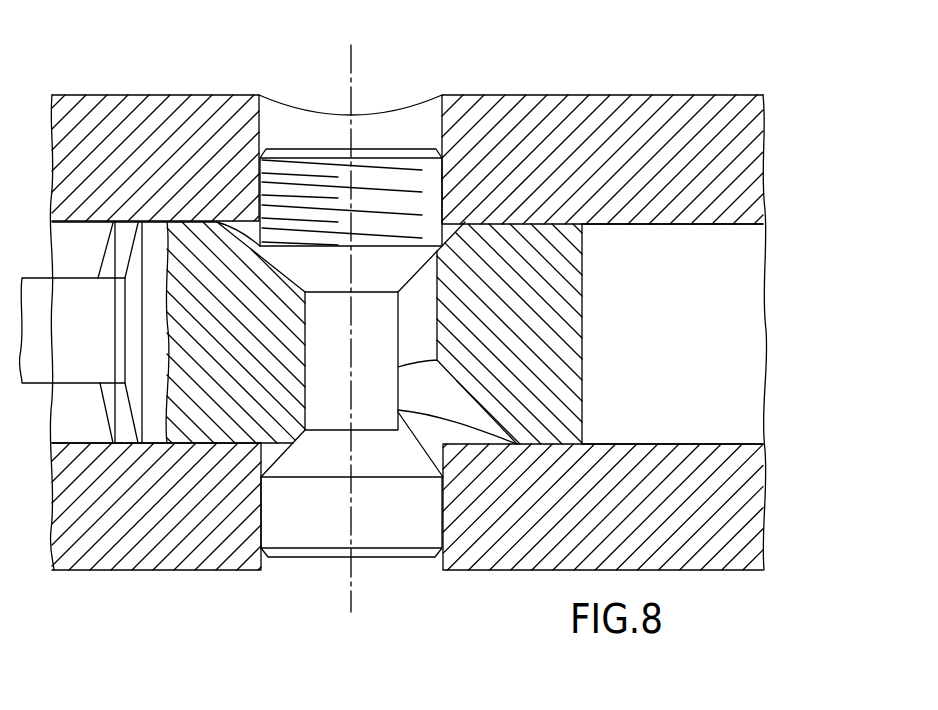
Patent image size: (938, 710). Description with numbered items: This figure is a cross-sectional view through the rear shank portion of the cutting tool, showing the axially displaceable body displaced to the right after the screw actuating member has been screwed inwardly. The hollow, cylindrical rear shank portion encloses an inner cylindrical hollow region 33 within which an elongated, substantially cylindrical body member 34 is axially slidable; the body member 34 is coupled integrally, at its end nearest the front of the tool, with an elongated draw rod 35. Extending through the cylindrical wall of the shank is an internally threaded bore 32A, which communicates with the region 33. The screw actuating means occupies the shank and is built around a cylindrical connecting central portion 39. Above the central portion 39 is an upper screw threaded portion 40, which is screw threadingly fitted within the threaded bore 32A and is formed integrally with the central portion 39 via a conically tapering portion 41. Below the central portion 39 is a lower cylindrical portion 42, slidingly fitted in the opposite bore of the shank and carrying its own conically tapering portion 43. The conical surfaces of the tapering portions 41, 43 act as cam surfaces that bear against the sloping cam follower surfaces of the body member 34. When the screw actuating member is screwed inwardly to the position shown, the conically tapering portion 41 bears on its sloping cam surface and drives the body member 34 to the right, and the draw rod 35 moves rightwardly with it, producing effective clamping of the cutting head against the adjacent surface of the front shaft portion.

The bore 32A is at (383, 133).
The inner cylindrical hollow region 33 is at (681, 293).
The body member 34 is at (547, 358).
The draw rod 35 is at (77, 345).
The central portion 39 is at (339, 368).
The upper screw threaded portion 40 is at (284, 158).
The conically tapering portion 41 is at (394, 280).
The lower cylindrical portion 42 is at (313, 533).
The conically tapering portion 43 is at (332, 465).